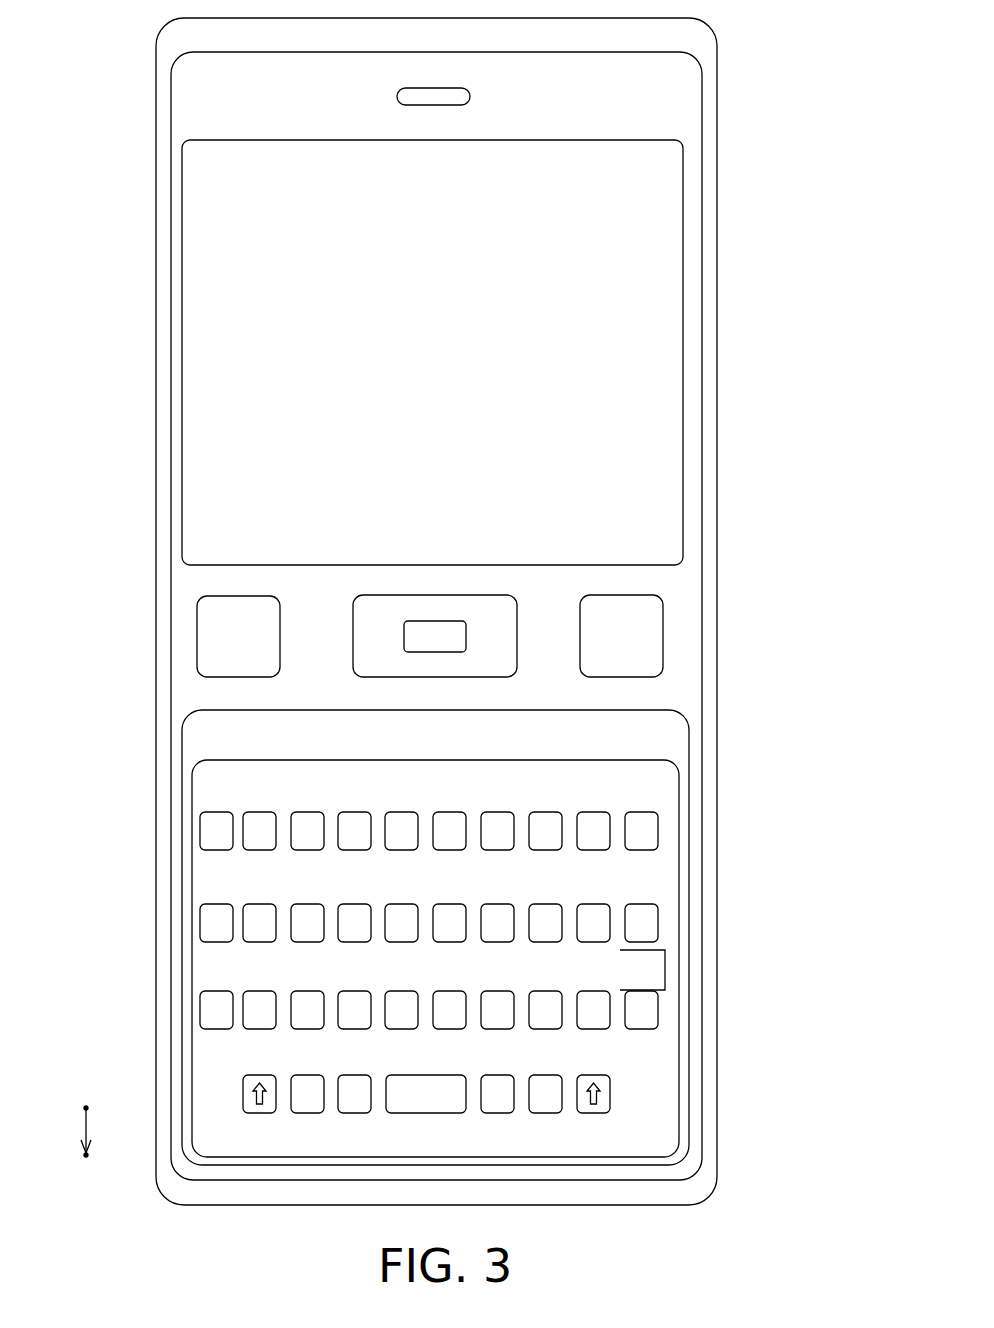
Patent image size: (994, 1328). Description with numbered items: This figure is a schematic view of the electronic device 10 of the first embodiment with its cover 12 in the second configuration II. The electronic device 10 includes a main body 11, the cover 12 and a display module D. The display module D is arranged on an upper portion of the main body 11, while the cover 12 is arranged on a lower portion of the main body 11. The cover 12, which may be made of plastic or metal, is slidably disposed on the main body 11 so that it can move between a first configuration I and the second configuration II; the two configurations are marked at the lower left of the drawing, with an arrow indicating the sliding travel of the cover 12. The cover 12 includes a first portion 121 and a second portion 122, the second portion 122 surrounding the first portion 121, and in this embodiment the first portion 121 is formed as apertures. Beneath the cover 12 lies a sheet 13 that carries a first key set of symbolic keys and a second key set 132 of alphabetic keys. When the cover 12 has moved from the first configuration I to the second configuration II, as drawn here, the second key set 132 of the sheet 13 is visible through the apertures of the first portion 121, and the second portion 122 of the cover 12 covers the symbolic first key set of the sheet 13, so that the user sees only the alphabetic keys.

The electronic device 10 is at (68, 31).
The main body 11 is at (690, 347).
The display module D is at (662, 237).
The sheet 13 is at (667, 738).
The cover 12 is at (797, 907).
The second key set 132 is at (656, 829).
The first portion 121 is at (657, 921).
The second portion 122 is at (656, 971).
The first configuration I is at (193, 1108).
The second configuration II is at (215, 1155).